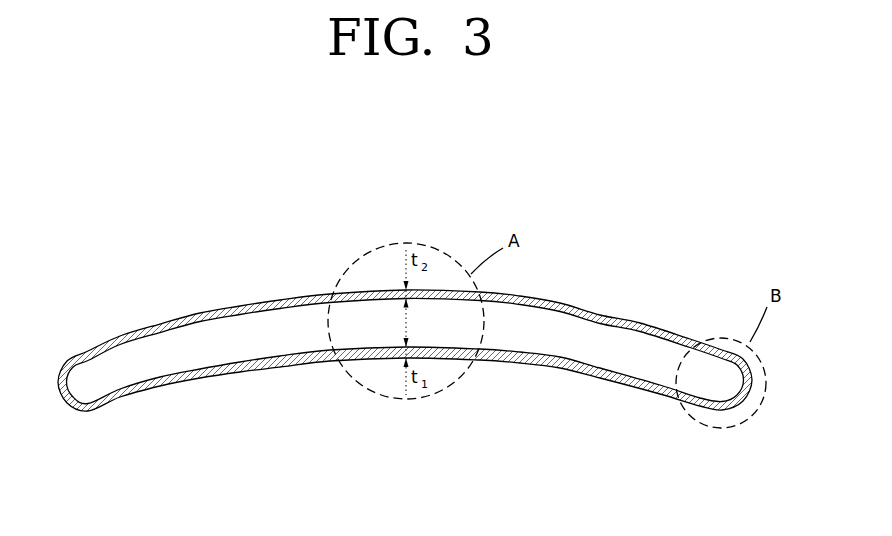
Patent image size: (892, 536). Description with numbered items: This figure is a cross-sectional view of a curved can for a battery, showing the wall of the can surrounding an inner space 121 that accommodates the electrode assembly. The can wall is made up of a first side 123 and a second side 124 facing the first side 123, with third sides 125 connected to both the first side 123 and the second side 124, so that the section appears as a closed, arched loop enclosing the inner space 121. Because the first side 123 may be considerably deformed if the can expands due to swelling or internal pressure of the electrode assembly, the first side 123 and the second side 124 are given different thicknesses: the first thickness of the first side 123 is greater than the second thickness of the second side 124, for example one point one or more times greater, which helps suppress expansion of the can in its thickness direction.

The inner space 121 is at (431, 348).
The first side 123 is at (213, 376).
The second side 124 is at (205, 312).
The third sides 125 is at (750, 393).